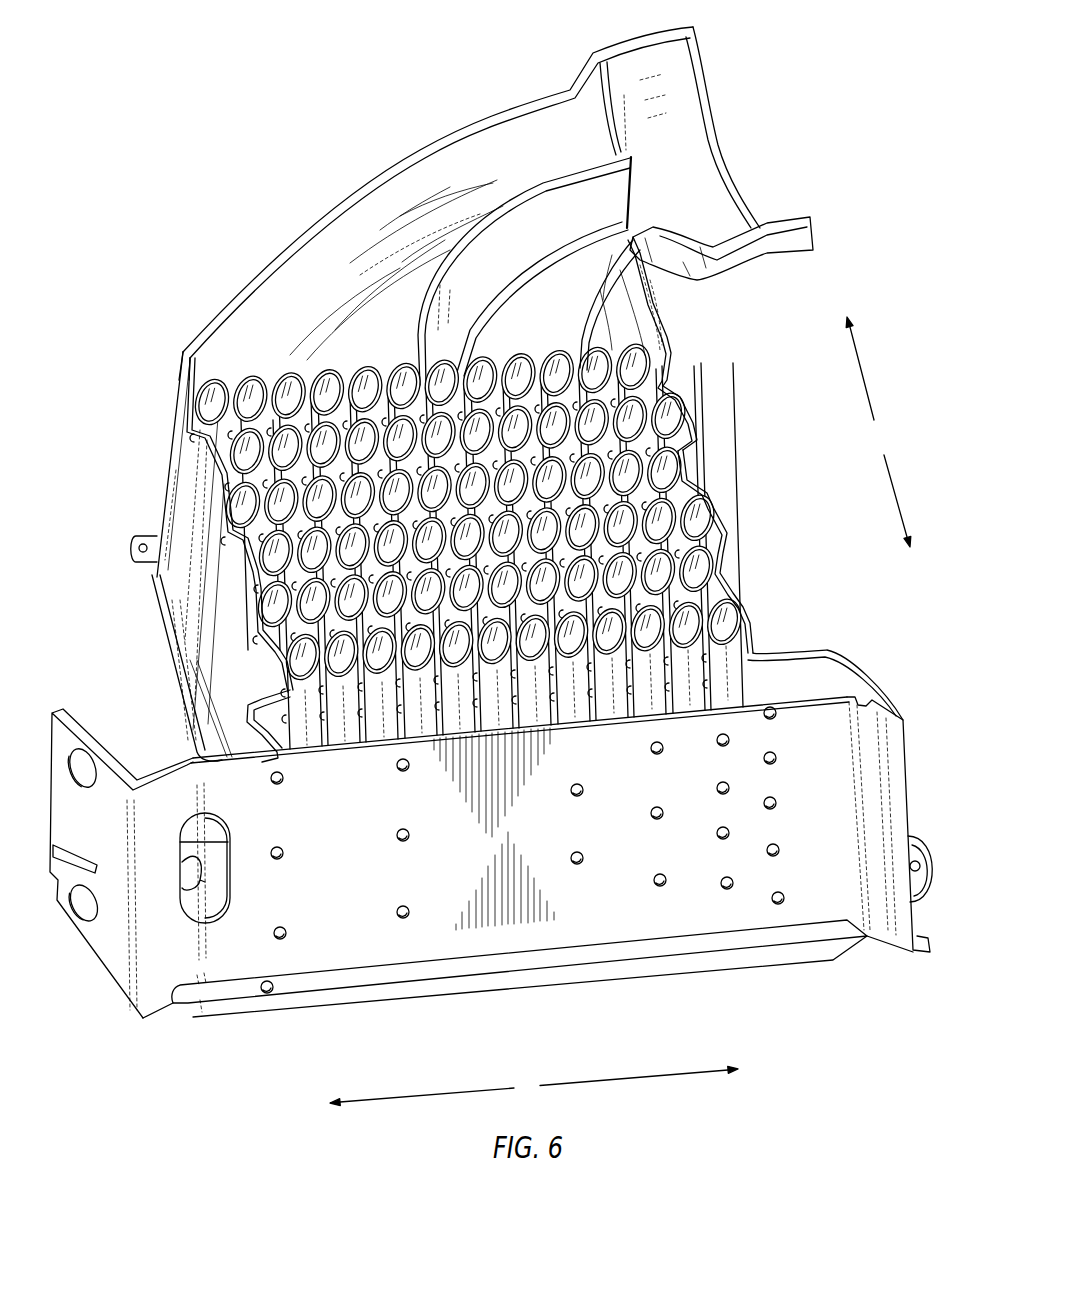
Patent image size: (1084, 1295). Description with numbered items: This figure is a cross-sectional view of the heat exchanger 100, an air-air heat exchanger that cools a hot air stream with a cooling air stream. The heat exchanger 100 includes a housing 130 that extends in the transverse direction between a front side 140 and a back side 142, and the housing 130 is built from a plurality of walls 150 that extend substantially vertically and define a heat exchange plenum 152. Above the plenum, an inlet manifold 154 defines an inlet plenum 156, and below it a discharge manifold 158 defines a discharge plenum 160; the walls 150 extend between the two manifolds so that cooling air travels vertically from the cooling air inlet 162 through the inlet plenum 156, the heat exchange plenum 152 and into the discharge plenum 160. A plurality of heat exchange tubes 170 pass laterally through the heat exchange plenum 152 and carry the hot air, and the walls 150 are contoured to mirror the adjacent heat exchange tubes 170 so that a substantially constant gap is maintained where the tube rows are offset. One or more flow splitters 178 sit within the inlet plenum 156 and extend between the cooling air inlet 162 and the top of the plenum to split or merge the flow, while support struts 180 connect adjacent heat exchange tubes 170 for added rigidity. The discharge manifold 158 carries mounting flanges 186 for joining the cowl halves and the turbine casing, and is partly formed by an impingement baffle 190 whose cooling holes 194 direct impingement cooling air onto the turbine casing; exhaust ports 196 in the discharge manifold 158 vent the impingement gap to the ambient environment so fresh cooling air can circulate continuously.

The heat exchanger 100 is at (170, 120).
The housing 130 is at (178, 430).
The front side 140 is at (216, 524).
The back side 142 is at (720, 514).
The walls 150 is at (697, 421).
The heat exchange plenum 152 is at (693, 453).
The inlet manifold 154 is at (421, 155).
The inlet plenum 156 is at (367, 237).
The discharge manifold 158 is at (828, 651).
The discharge plenum 160 is at (781, 680).
The cooling air inlet 162 is at (722, 146).
The heat exchange tubes 170 is at (262, 623).
The flow splitters 178 is at (550, 213).
The support struts 180 is at (278, 691).
The mounting flanges 186 is at (907, 774).
The impingement baffle 190 is at (428, 906).
The cooling holes 194 is at (778, 899).
The exhaust ports 196 is at (182, 897).